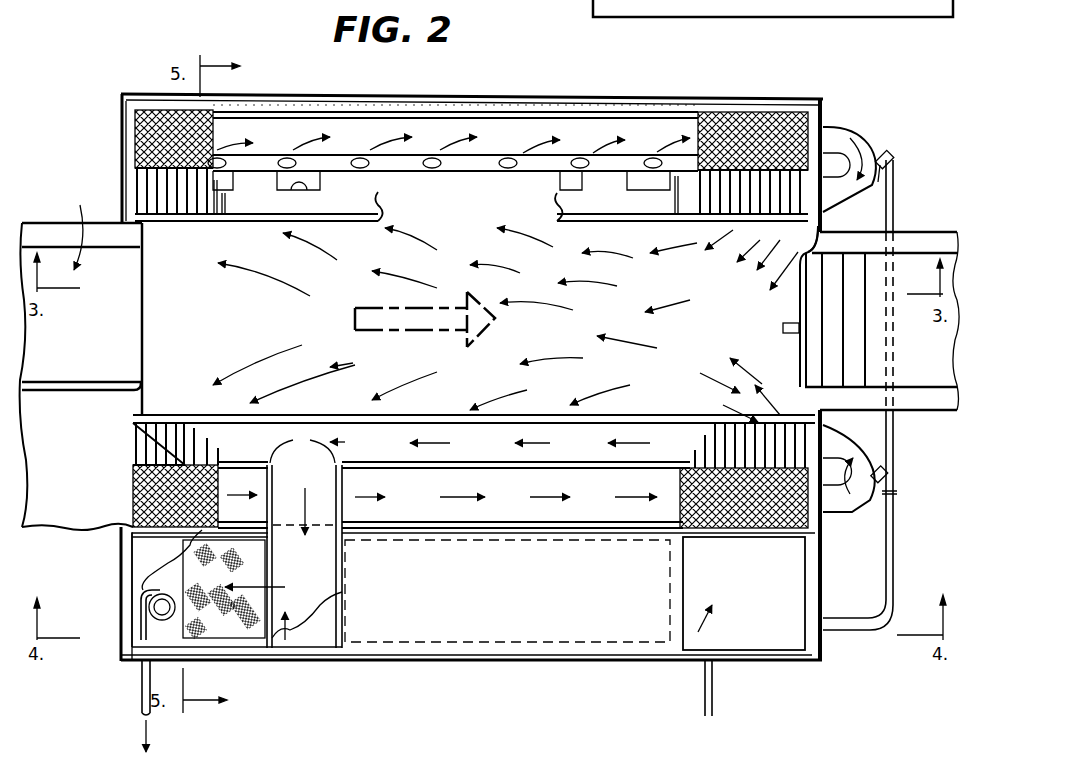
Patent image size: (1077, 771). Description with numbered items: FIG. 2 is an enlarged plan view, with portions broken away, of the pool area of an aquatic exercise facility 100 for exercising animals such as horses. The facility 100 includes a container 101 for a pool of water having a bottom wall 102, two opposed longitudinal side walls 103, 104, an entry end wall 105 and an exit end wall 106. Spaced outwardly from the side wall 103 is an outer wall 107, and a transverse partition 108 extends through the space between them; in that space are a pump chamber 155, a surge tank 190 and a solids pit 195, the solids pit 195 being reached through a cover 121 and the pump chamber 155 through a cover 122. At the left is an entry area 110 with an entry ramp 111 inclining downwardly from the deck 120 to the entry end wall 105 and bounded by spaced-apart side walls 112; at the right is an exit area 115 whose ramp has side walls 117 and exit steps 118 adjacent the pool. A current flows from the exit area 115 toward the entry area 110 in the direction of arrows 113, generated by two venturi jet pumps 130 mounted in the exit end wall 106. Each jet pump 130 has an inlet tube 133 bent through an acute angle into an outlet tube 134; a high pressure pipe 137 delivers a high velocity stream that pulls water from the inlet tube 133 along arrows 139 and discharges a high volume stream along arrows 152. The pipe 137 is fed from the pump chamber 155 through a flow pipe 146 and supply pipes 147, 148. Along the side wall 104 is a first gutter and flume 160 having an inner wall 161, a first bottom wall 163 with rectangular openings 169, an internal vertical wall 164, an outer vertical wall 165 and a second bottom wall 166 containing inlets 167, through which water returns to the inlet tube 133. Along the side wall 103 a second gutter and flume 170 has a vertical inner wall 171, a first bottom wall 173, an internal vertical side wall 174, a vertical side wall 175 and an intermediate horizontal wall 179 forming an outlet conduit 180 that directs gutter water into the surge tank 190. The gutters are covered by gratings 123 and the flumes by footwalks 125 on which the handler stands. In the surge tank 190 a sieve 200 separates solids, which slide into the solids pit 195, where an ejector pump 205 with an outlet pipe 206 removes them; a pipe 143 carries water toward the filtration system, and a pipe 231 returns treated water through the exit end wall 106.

The aquatic exercise facility 100 is at (80, 68).
The container 101 is at (122, 190).
The bottom wall 102 is at (238, 317).
The side wall 103 is at (472, 545).
The side wall 104 is at (418, 102).
The entry end wall 105 is at (124, 133).
The exit end wall 106 is at (820, 118).
The outer wall 107 is at (497, 663).
The transverse partition 108 is at (668, 590).
The entry area 110 is at (78, 225).
The entry ramp 111 is at (112, 326).
The side walls 112 is at (42, 233).
The arrows 113 is at (657, 310).
The exit area 115 is at (906, 226).
The side walls 117 is at (906, 393).
The exit steps 118 is at (868, 310).
The deck 120 is at (75, 456).
The cover 121 is at (340, 598).
The cover 122 is at (758, 592).
The grating 123 is at (196, 222).
The footwalk 125 is at (213, 152).
The venturi jet pumps 130 is at (878, 130).
The inlet tube 133 is at (840, 130).
The outlet tube 134 is at (810, 248).
The high pressure pipe 137 is at (878, 182).
The arrows 139 is at (866, 157).
The pipe 143 is at (714, 688).
The flow pipe 146 is at (893, 190).
The supply pipe 147 is at (897, 486).
The supply pipe 148 is at (896, 162).
The arrows 152 is at (745, 268).
The pump chamber 155 is at (700, 662).
The first gutter and flume 160 is at (525, 133).
The inner wall 161 is at (380, 218).
The first bottom wall 163 is at (362, 192).
The internal vertical wall 164 is at (540, 175).
The outer vertical wall 165 is at (490, 113).
The second bottom wall 166 is at (352, 130).
The inlets 167 is at (430, 172).
The rectangular openings 169 is at (300, 188).
The second gutter and flume 170 is at (358, 412).
The vertical inner wall 171 is at (434, 415).
The first bottom wall 173 is at (495, 453).
The internal vertical side wall 174 is at (540, 468).
The vertical side wall 175 is at (476, 530).
The intermediate horizontal wall 179 is at (426, 504).
The outlet conduit 180 is at (340, 520).
The surge tank 190 is at (402, 665).
The solids pit 195 is at (290, 642).
The sieve 200 is at (233, 640).
The ejector pump 205 is at (135, 598).
The outlet pipe 206 is at (140, 690).
The pipe 231 is at (783, 328).